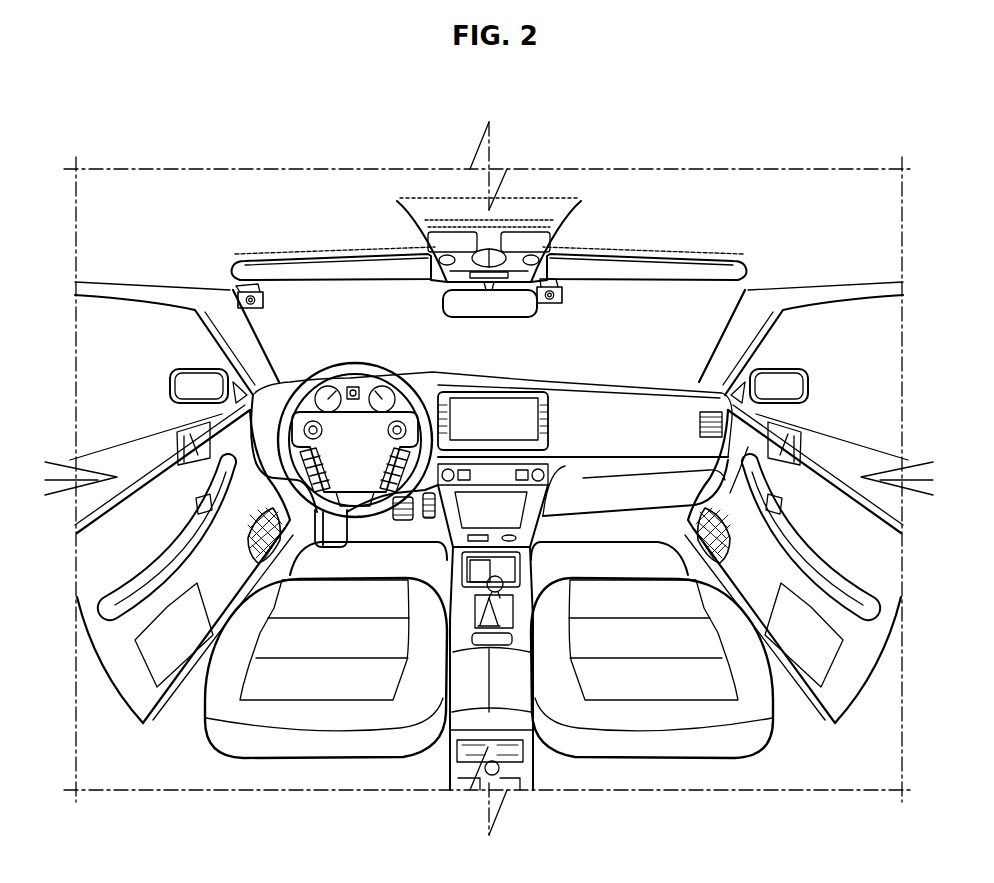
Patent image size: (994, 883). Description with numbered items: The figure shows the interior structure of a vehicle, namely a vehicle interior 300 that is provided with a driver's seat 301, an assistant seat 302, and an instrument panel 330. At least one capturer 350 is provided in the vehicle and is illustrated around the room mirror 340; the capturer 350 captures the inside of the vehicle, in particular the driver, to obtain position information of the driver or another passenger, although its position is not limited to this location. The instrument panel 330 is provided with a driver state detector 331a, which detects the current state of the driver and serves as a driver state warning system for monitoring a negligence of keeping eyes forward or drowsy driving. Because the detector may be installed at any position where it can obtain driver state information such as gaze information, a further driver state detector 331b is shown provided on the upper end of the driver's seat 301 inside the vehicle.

The vehicle interior 300 is at (632, 110).
The driver's seat 301 is at (308, 743).
The assistant seat 302 is at (682, 742).
The instrument panel 330 is at (303, 387).
The driver state detector 331a is at (353, 386).
The driver state detector 331b is at (234, 288).
The room mirror 340 is at (455, 315).
The capturer 350 is at (548, 304).